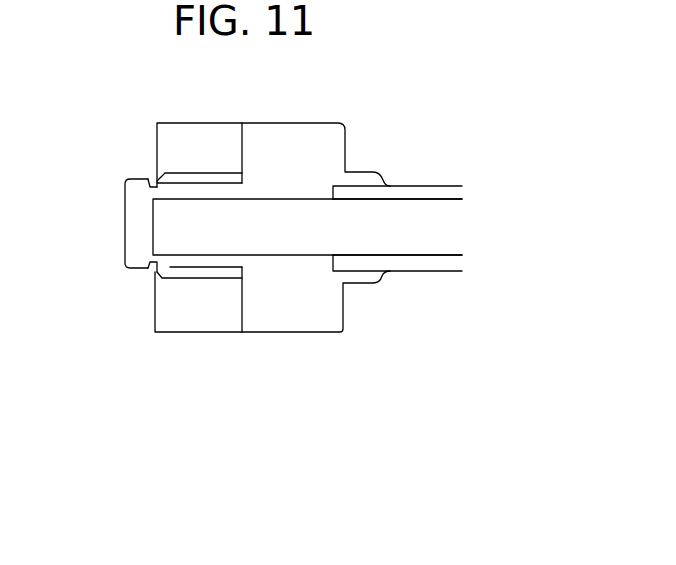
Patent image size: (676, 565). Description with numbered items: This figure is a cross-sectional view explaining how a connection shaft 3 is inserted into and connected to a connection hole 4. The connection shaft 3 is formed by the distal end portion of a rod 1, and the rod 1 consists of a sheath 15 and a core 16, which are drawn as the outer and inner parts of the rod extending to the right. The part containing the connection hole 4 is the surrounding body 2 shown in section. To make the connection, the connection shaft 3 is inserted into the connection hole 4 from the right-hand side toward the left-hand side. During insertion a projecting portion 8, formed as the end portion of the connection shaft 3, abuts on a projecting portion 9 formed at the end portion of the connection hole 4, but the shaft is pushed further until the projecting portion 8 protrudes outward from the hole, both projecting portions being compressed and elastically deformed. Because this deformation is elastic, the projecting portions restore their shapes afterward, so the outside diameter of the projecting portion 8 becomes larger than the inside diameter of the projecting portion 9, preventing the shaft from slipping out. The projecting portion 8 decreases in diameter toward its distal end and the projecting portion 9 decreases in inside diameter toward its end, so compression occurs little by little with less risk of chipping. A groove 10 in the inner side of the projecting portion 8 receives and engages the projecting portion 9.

The rod 1 is at (458, 233).
The nut 2 is at (292, 140).
The connection shaft 3 is at (173, 223).
The connection hole 4 is at (187, 280).
The projecting portion 8 is at (140, 263).
The projecting portion 9 is at (160, 174).
The groove 10 is at (155, 273).
The sheath 15 is at (407, 193).
The core 16 is at (378, 230).